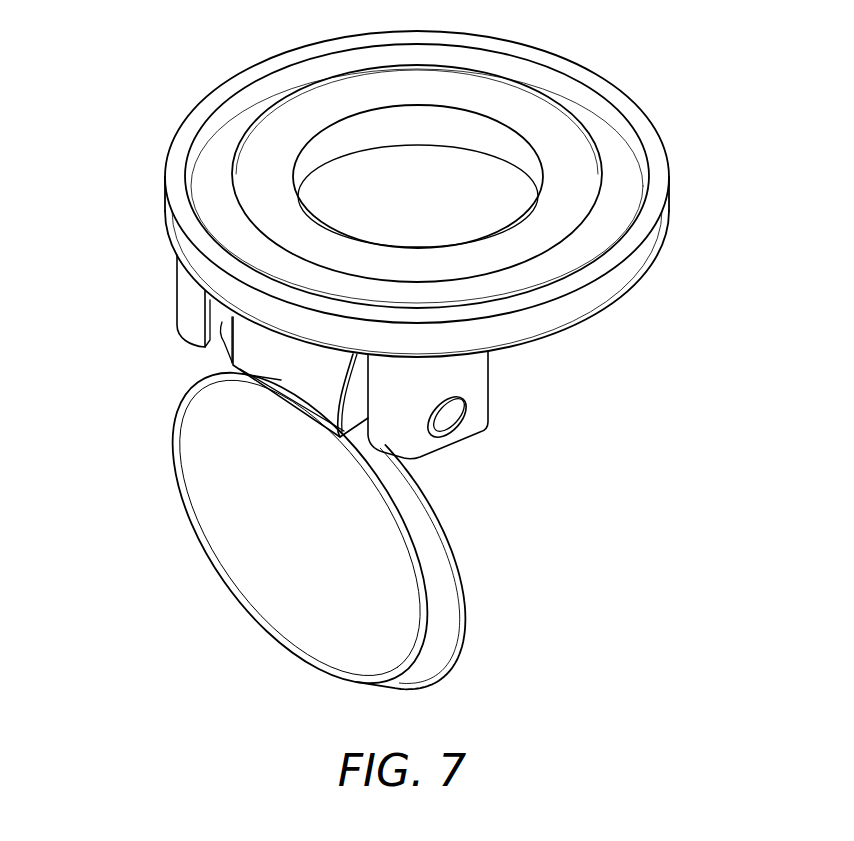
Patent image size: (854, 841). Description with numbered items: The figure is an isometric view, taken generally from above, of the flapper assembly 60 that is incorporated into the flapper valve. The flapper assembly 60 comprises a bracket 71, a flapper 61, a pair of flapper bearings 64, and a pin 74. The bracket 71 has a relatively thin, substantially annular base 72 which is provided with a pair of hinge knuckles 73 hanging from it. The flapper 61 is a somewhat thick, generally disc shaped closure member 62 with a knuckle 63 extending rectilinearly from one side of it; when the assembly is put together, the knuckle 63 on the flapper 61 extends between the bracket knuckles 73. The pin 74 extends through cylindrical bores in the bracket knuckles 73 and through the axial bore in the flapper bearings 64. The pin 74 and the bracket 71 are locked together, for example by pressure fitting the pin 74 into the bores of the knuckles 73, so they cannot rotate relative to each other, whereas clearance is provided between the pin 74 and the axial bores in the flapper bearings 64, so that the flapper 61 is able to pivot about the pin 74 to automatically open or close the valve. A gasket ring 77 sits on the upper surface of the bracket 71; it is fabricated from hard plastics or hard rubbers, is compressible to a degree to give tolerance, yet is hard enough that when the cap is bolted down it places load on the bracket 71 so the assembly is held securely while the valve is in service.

The flapper assembly 60 is at (120, 99).
The flapper 61 is at (288, 596).
The closure member 62 is at (215, 507).
The knuckle 63 is at (311, 383).
The flapper bearings 64 is at (228, 338).
The bracket 71 is at (627, 99).
The base 72 is at (652, 243).
The hinge knuckles 73 is at (190, 295).
The pin 74 is at (443, 419).
The gasket ring 77 is at (313, 74).